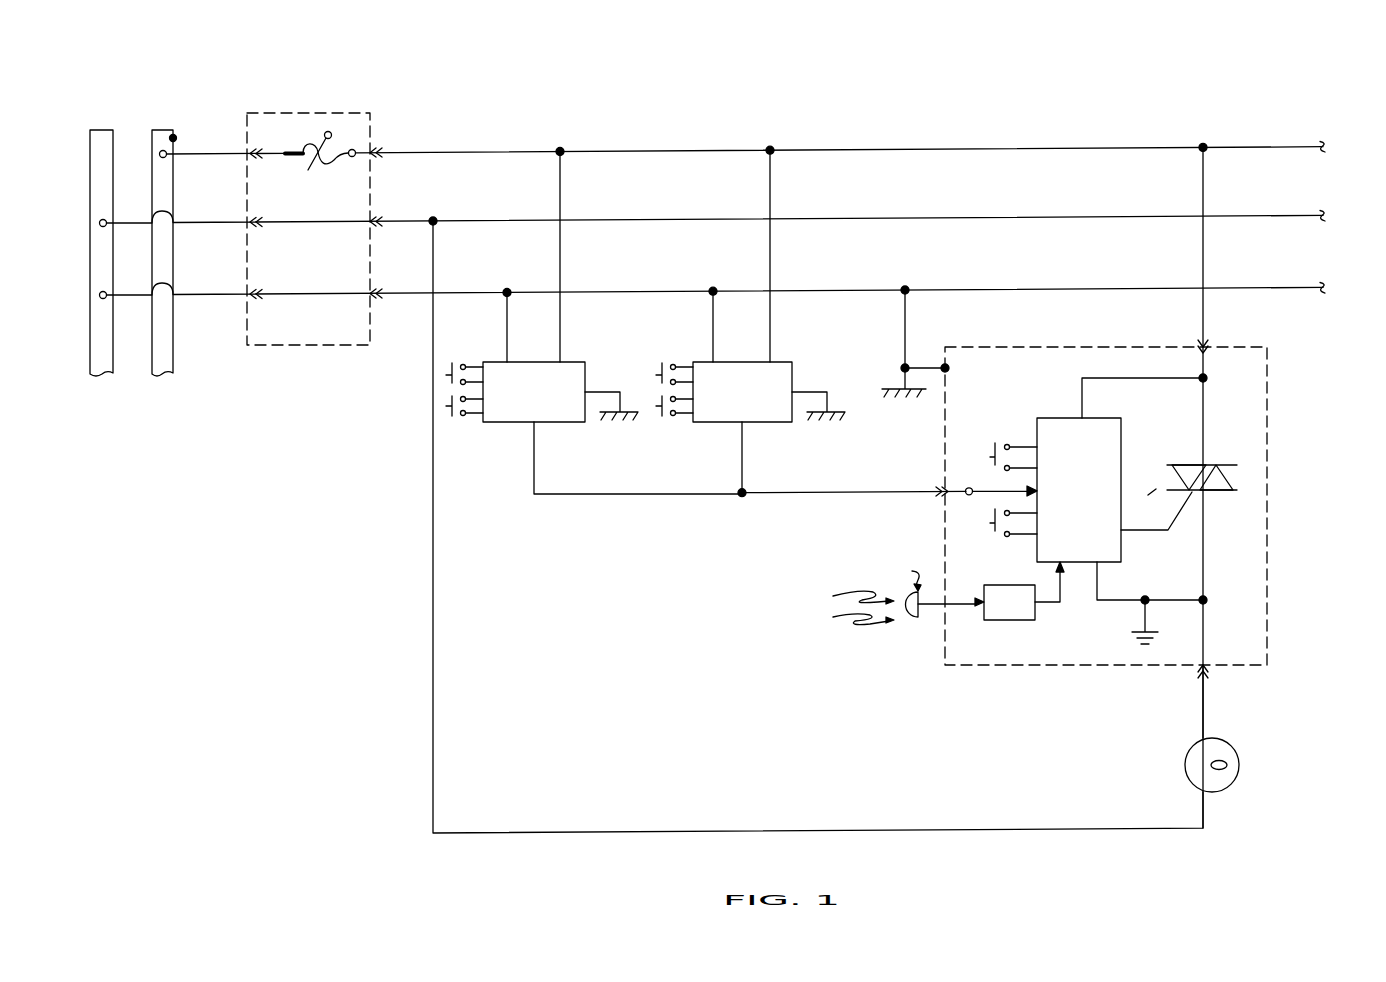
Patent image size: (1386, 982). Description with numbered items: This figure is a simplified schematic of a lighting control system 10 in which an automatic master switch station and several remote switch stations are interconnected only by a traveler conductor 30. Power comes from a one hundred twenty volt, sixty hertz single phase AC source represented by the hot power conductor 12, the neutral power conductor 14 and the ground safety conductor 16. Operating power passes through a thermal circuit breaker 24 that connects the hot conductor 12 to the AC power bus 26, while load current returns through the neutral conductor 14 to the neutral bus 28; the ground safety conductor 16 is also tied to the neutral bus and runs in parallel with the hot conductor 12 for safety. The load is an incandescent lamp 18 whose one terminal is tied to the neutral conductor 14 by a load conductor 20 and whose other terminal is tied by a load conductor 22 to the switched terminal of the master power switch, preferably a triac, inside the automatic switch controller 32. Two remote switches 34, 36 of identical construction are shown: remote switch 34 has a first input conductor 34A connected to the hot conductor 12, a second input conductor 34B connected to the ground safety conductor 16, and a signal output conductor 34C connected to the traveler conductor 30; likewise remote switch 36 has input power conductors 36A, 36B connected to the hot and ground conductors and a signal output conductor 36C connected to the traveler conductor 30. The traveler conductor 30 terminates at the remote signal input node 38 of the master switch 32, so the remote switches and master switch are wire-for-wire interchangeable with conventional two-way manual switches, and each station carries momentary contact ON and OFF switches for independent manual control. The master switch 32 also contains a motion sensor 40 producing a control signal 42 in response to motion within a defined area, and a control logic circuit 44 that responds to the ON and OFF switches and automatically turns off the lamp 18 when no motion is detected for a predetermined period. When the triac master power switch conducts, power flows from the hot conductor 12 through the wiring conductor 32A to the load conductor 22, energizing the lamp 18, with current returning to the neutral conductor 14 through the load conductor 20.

The lighting control system 10 is at (553, 634).
The hot power conductor 12 is at (1043, 148).
The neutral power conductor 14 is at (1083, 217).
The ground safety conductor 16 is at (1132, 287).
The incandescent lamp 18 is at (1230, 747).
The load conductor 20 is at (797, 831).
The load conductor 22 is at (1203, 701).
The thermal circuit breaker 24 is at (374, 128).
The AC power bus 26 is at (172, 367).
The neutral bus 28 is at (111, 367).
The traveler conductor 30 is at (767, 495).
The automatic switch controller 32 is at (1267, 492).
The wiring conductor 32A is at (1203, 262).
The remote switch 34 is at (568, 363).
The first input conductor 34A is at (560, 263).
The second input conductor 34B is at (507, 333).
The signal output conductor 34C is at (534, 466).
The remote switch 36 is at (781, 363).
The input power conductor 36A is at (770, 263).
The input power conductor 36B is at (713, 333).
The signal output conductor 36C is at (742, 457).
The remote signal input node 38 is at (977, 470).
The motion sensor 40 is at (990, 620).
The control signal 42 is at (1047, 603).
The control logic circuit 44 is at (1096, 509).